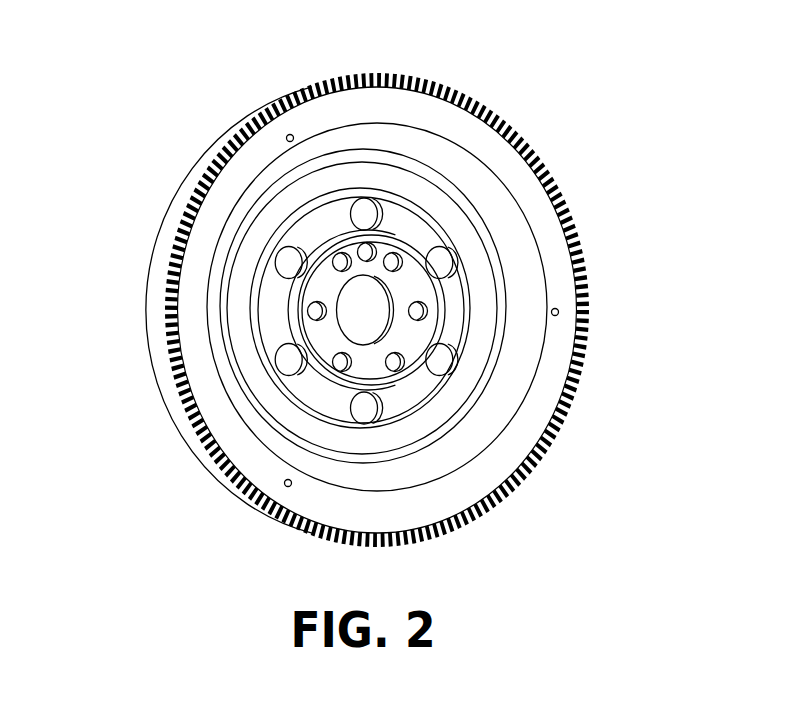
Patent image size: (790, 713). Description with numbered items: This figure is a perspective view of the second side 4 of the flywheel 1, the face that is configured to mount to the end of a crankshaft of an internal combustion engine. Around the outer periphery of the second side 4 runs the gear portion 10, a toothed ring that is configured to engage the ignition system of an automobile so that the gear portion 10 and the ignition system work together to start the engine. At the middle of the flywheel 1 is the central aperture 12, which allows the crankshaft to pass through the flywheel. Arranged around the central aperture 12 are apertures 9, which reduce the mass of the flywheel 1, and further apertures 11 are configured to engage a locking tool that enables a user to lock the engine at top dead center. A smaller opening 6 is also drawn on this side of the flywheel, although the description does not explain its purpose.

The flywheel 1 is at (493, 83).
The second side 4 is at (518, 175).
The small hole 6 is at (392, 363).
The apertures 9 is at (286, 362).
The gear portion 10 is at (183, 212).
The apertures 11 is at (290, 134).
The central aperture 12 is at (370, 307).